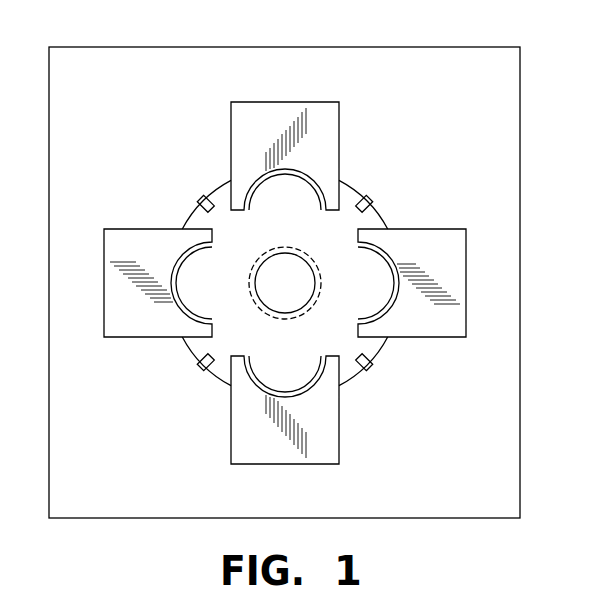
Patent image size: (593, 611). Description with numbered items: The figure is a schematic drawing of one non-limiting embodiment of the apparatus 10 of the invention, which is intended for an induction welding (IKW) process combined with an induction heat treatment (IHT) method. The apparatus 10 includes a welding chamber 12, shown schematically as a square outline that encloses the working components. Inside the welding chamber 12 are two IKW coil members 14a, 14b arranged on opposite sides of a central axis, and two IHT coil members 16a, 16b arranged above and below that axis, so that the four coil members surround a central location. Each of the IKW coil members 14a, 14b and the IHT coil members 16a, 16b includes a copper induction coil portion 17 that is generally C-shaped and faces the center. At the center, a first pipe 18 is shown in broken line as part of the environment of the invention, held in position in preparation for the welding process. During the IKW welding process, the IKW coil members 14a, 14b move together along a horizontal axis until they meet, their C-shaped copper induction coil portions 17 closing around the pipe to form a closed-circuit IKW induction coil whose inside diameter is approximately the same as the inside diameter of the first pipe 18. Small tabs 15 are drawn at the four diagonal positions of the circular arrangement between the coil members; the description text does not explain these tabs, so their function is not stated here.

The apparatus 10 is at (539, 84).
The welding chamber 12 is at (520, 152).
The IKW coil member 14a is at (104, 282).
The IKW coil member 14b is at (465, 275).
The locating tabs 15 is at (206, 194).
The IHT coil member 16a is at (311, 102).
The IHT coil member 16b is at (320, 463).
The copper induction coil portion 17 is at (266, 171).
The first pipe 18 is at (323, 278).